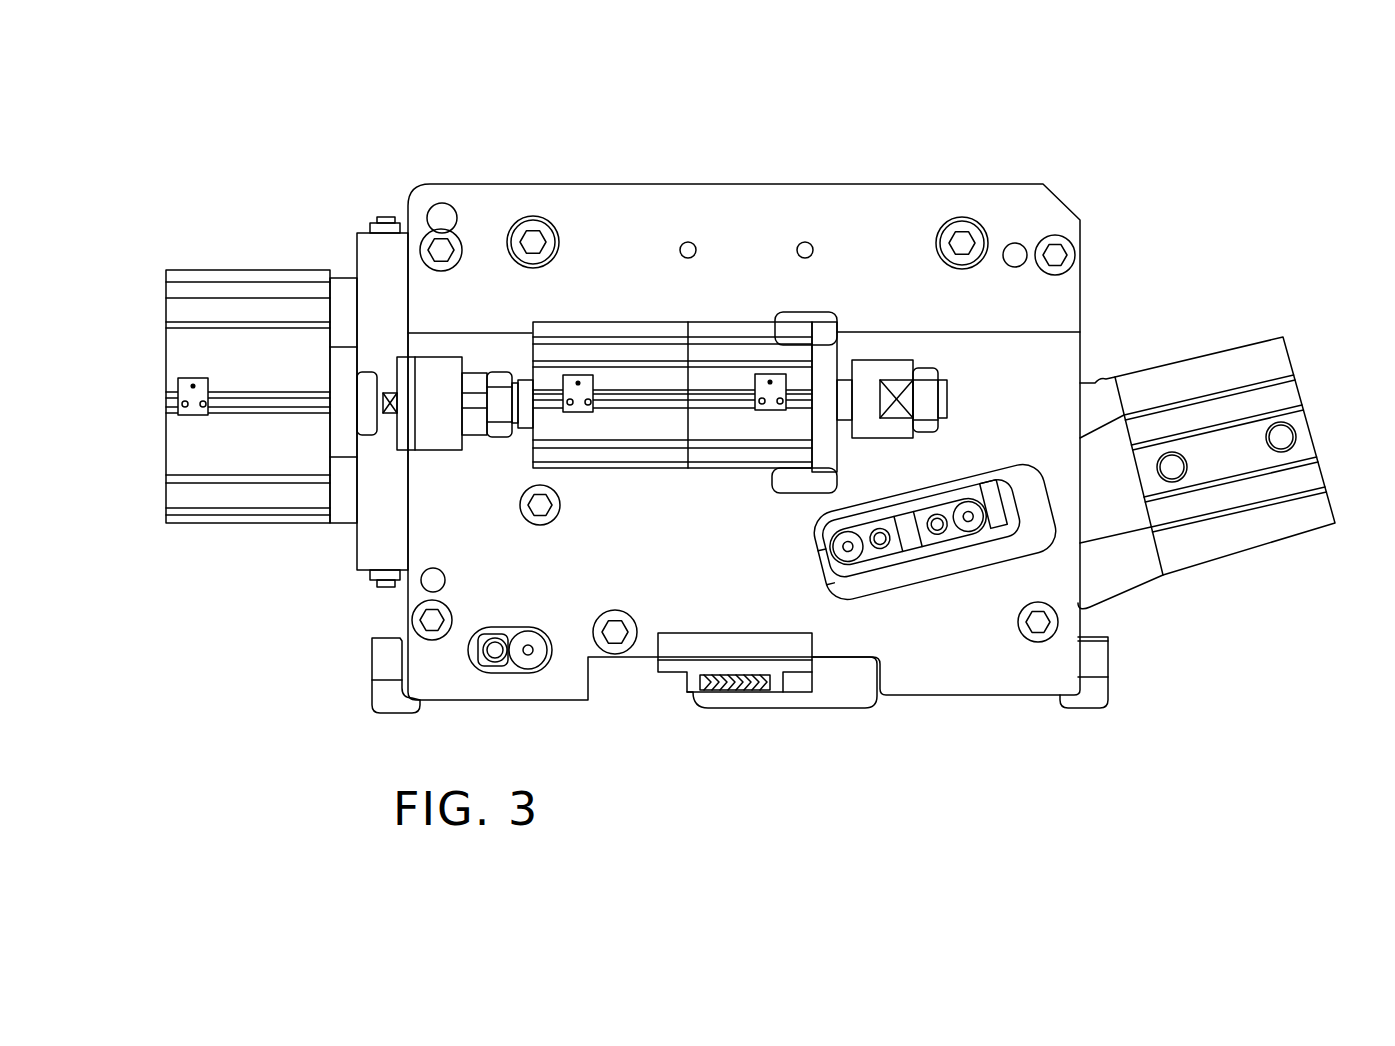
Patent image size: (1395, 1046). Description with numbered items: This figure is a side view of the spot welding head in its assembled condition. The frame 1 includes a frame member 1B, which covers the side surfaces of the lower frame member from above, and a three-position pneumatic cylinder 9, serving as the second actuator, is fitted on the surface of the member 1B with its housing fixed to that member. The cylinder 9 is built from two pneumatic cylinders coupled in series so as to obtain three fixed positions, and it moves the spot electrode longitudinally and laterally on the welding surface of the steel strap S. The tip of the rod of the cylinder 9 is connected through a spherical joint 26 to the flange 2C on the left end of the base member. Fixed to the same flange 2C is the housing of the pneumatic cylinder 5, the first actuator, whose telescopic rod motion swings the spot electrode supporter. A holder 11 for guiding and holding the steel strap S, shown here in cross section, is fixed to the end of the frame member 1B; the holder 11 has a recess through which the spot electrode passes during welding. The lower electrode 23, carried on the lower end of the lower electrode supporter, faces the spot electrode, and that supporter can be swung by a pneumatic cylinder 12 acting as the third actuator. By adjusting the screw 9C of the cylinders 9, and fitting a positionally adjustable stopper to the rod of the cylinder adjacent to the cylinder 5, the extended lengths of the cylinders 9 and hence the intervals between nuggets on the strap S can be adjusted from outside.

The frame 1 is at (860, 200).
The frame member 1B is at (758, 200).
The pneumatic cylinder (first actuator) 5 is at (220, 278).
The flange 2C is at (345, 505).
The spherical joint 26 is at (438, 440).
The pneumatic cylinder (second actuator) 9 is at (612, 327).
The screw 9C is at (927, 398).
The pneumatic cylinder (third actuator) 12 is at (1197, 372).
The holder 11 is at (690, 682).
The steel strap S is at (727, 692).
The lower electrode 23 is at (788, 700).